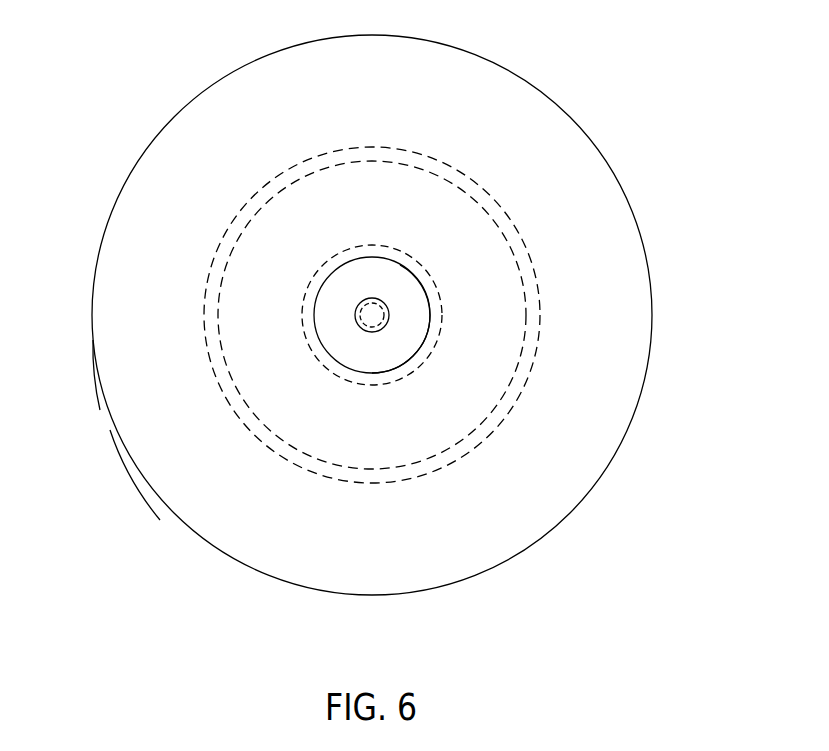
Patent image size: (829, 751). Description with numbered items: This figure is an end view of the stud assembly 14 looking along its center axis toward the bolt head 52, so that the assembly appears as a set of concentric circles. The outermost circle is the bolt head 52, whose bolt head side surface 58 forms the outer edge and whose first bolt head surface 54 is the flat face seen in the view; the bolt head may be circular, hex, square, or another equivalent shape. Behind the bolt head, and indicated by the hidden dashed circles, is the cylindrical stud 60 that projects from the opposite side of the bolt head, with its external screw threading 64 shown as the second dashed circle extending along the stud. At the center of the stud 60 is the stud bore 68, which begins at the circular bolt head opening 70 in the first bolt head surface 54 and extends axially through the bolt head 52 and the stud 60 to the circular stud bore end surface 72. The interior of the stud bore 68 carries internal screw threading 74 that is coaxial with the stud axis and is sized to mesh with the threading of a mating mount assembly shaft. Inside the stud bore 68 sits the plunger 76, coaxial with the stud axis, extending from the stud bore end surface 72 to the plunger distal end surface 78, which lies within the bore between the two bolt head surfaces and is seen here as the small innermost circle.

The stud assembly 14 is at (690, 200).
The bolt head 52 is at (107, 222).
The first bolt head surface 54 is at (155, 442).
The bolt head side surface 58 is at (102, 390).
The stud 60 is at (533, 350).
The external screw threading 64 is at (518, 397).
The stud bore 68 is at (278, 227).
The bolt head opening 70 is at (408, 358).
The stud bore end surface 72 is at (383, 273).
The internal screw threading 74 is at (424, 290).
The plunger 76 is at (362, 328).
The plunger distal end surface 78 is at (372, 315).